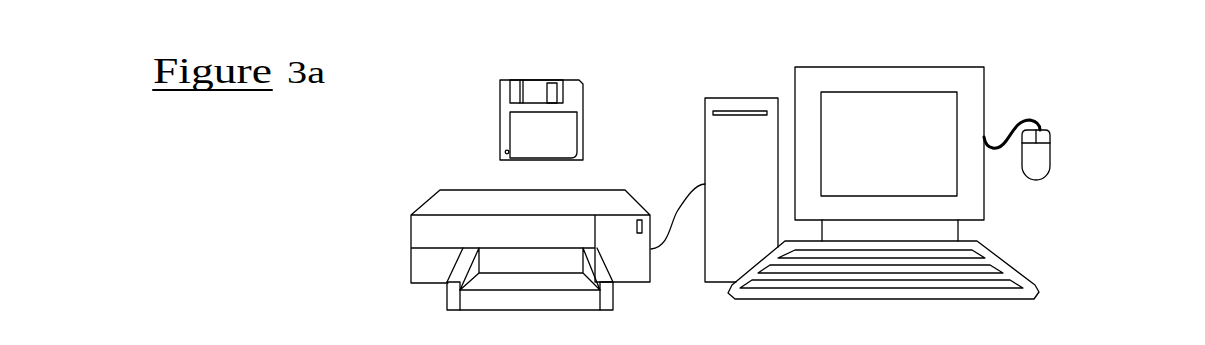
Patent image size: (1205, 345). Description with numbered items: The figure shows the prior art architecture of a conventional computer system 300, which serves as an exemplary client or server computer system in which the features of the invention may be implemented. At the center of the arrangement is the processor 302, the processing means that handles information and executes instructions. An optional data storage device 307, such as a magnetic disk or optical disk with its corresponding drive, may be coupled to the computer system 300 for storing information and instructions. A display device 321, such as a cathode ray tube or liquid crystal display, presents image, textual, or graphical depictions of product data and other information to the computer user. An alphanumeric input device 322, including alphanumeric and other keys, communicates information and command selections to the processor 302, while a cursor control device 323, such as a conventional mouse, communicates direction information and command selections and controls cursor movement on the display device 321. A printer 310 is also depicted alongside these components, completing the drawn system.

The computer system 300 is at (992, 52).
The processor 302 is at (740, 100).
The data storage device 307 is at (502, 138).
The printer 310 is at (413, 208).
The display device 321 is at (984, 102).
The alphanumeric input device 322 is at (1033, 283).
The cursor control device 323 is at (1050, 157).